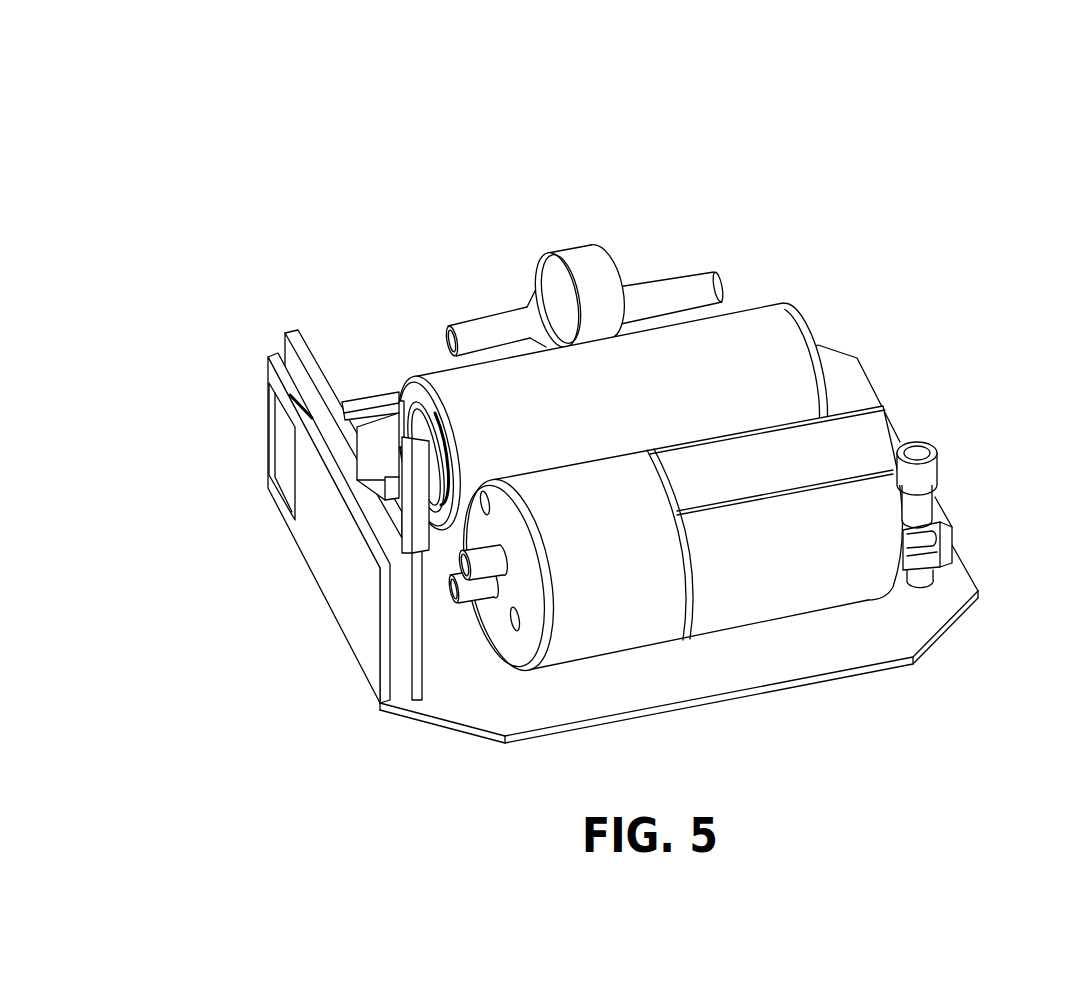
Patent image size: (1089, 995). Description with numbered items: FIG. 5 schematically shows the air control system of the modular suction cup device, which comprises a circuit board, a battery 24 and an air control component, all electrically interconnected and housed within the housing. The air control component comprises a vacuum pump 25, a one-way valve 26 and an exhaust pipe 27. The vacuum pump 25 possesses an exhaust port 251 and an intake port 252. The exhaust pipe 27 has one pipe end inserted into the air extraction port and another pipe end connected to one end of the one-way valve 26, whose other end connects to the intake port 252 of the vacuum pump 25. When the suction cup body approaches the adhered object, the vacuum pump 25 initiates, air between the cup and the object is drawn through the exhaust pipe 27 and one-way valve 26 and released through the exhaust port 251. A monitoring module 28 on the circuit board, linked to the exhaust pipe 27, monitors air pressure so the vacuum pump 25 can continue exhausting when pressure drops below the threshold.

The battery 24 is at (732, 360).
The vacuum pump 25 is at (748, 472).
The exhaust port 251 is at (490, 563).
The intake port 252 is at (470, 592).
The one-way valve 26 is at (569, 264).
The exhaust pipe 27 is at (950, 527).
The monitoring module 28 is at (382, 453).